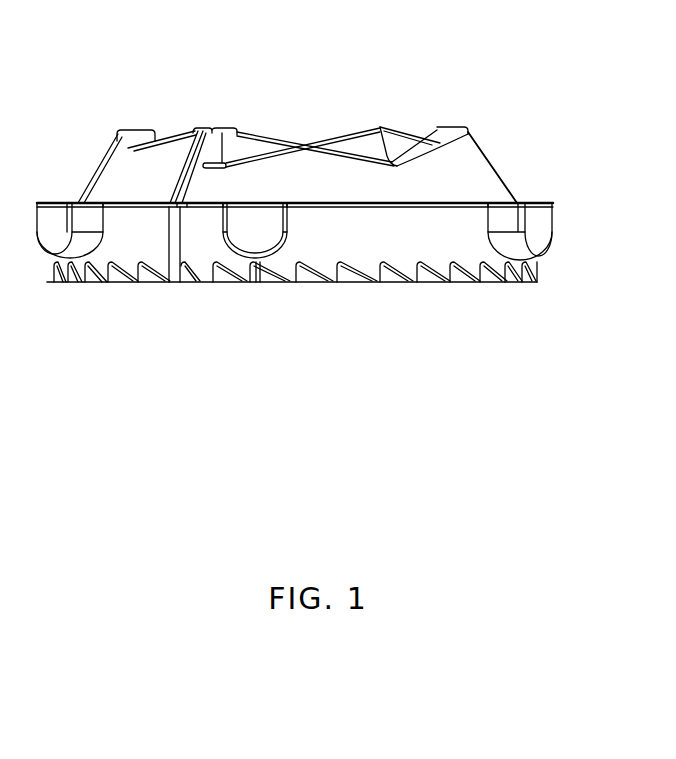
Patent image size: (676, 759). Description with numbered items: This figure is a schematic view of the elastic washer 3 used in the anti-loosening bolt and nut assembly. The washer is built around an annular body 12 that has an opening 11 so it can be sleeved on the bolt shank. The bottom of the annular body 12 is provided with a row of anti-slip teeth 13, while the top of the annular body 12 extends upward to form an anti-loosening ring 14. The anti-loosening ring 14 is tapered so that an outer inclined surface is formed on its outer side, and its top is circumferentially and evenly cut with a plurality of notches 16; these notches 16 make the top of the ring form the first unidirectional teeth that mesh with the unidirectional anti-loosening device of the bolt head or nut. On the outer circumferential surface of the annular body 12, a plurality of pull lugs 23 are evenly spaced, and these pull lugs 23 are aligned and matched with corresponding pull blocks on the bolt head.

The elastic washer 3 is at (178, 103).
The opening 11 is at (174, 248).
The annular body 12 is at (410, 238).
The anti-slip teeth 13 is at (488, 283).
The anti-loosening ring 14 is at (475, 182).
The notch 16 is at (430, 143).
The pull lug 23 is at (300, 226).